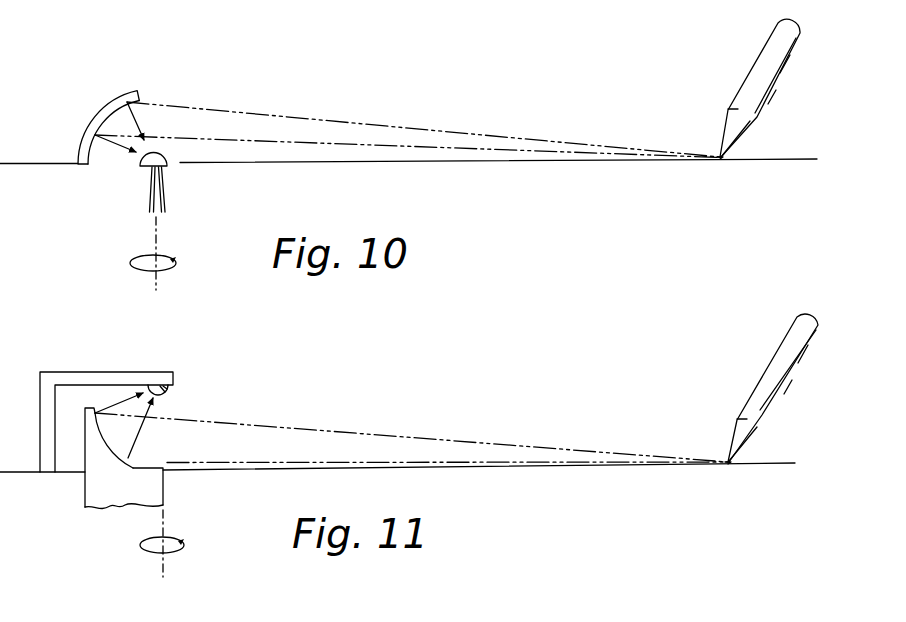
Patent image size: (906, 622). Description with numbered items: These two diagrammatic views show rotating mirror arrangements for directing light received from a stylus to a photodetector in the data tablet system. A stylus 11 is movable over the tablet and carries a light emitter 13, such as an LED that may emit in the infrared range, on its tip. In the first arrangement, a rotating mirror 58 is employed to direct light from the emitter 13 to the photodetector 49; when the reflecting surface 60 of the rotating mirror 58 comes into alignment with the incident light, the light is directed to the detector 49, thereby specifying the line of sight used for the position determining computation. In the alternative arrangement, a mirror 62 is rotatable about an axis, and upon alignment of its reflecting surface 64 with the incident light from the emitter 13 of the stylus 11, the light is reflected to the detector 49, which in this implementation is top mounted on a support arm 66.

In FIG. 10, the stylus 11 is at (758, 97).
In FIG. 11, the stylus 11 is at (768, 415).
In FIG. 10, the light emitter 13 is at (720, 161).
In FIG. 11, the light emitter 13 is at (729, 465).
In FIG. 10, the photodetector 49 is at (158, 157).
In FIG. 11, the photodetector 49 is at (168, 390).
In FIG. 10, the rotating mirror 58 is at (100, 103).
In FIG. 10, the reflecting surface 60 is at (105, 123).
In FIG. 11, the mirror 62 is at (93, 478).
In FIG. 11, the reflecting surface 64 is at (108, 441).
In FIG. 11, the support arm 66 is at (97, 372).